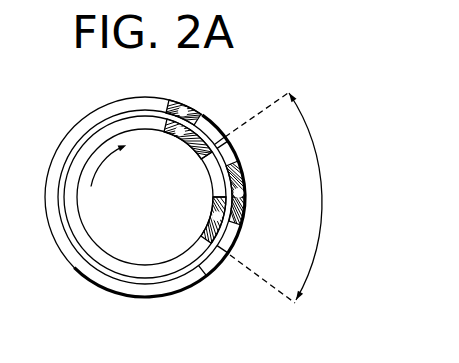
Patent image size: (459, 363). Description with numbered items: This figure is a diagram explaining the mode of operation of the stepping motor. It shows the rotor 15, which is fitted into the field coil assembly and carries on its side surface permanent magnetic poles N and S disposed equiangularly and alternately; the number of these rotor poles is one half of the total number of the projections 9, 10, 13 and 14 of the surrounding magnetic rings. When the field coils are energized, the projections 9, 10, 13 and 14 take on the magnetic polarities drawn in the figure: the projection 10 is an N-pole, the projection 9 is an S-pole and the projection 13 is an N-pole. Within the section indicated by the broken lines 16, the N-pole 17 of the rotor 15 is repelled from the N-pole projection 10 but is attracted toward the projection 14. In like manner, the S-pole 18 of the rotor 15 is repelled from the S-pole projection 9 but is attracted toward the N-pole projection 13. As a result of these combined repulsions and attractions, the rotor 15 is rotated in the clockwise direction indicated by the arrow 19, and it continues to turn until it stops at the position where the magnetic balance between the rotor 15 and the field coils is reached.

The projection 9 is at (232, 146).
The projection 10 is at (240, 213).
The projection 13 is at (243, 185).
The projection 14 is at (207, 118).
The rotor 15 is at (122, 252).
The broken lines 16 is at (281, 198).
The N-pole 17 is at (212, 212).
The S-pole 18 is at (207, 157).
The arrow 19 is at (97, 170).